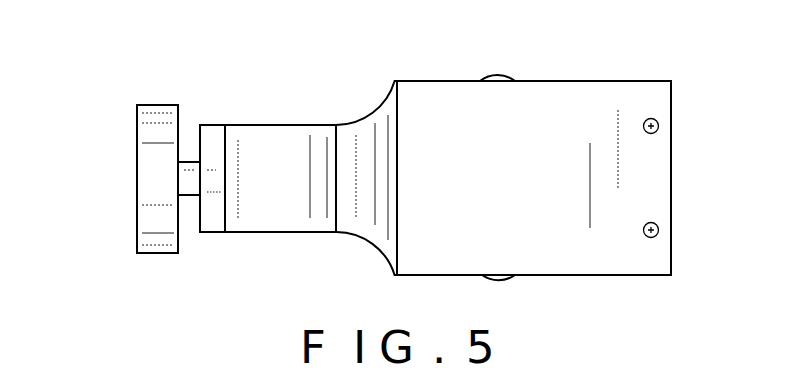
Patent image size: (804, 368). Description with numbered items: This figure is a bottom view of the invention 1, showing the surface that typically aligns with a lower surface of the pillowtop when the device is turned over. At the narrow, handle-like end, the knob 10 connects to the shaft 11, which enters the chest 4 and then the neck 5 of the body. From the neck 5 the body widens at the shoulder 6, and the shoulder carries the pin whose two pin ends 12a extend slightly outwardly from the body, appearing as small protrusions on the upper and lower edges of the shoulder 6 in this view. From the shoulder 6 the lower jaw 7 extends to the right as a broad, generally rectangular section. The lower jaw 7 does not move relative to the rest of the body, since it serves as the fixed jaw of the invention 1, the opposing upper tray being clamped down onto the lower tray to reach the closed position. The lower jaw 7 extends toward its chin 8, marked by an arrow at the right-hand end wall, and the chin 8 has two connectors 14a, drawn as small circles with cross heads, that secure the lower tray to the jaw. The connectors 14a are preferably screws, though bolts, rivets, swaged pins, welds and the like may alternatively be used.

The invention 1 is at (110, 77).
The chest 4 is at (209, 224).
The neck 5 is at (264, 215).
The shoulder 6 is at (447, 252).
The lower jaw 7 is at (671, 146).
The chin 8 is at (680, 180).
The knob 10 is at (137, 182).
The shaft 11 is at (187, 162).
The pin ends 12a is at (497, 75).
The connectors 14a is at (655, 119).